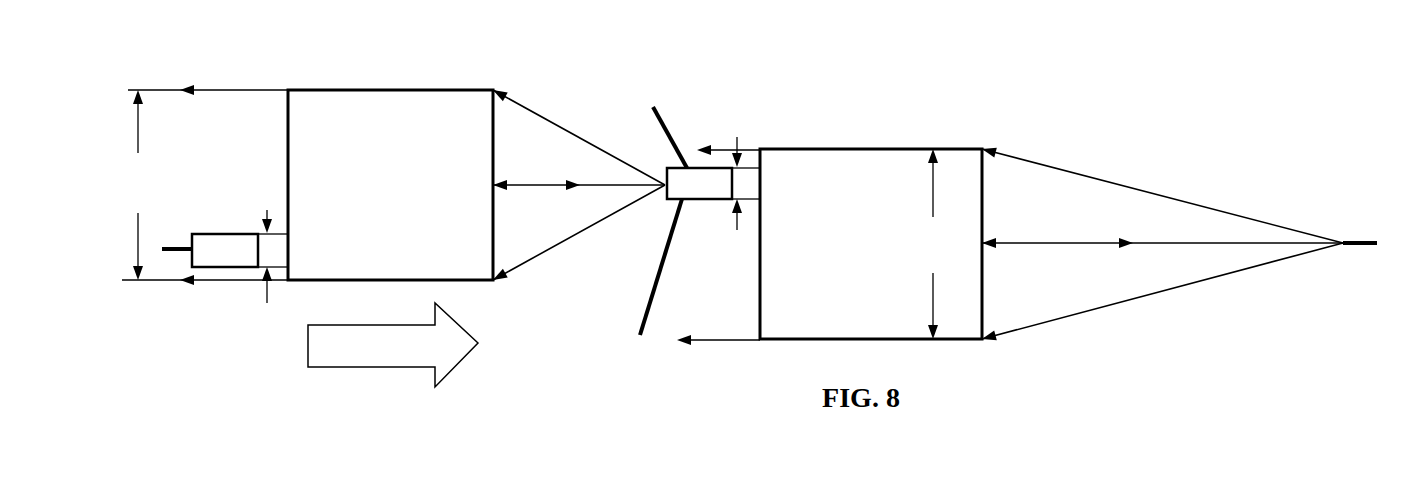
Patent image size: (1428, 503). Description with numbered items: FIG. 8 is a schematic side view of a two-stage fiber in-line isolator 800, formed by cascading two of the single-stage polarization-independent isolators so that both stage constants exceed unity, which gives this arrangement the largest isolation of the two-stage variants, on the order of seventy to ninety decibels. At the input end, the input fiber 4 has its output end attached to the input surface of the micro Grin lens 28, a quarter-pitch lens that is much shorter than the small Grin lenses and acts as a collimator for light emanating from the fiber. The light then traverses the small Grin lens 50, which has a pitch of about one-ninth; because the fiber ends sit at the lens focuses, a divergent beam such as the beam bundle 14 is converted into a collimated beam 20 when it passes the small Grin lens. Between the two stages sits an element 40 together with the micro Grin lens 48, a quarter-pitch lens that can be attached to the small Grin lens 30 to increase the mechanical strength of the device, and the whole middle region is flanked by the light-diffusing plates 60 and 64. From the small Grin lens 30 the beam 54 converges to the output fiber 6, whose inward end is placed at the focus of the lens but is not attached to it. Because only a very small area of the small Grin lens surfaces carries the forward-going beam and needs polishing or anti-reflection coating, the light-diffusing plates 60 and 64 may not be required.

The two-stage fiber in-line isolator 800 is at (1193, 81).
The collimated beam 20 is at (224, 90).
The input fiber 4 is at (171, 247).
The micro Grin lens 28 is at (206, 232).
The small Grin lens 50 is at (361, 90).
The beam bundle 14 is at (556, 118).
The light-diffusing plate 60 is at (656, 100).
The light-diffusing plate 64 is at (630, 330).
The optical element 40 is at (713, 150).
The micro Grin lens 48 is at (702, 200).
The small Grin lens 30 is at (850, 149).
The output light beam 54 is at (1247, 215).
The output fiber 6 is at (1358, 242).